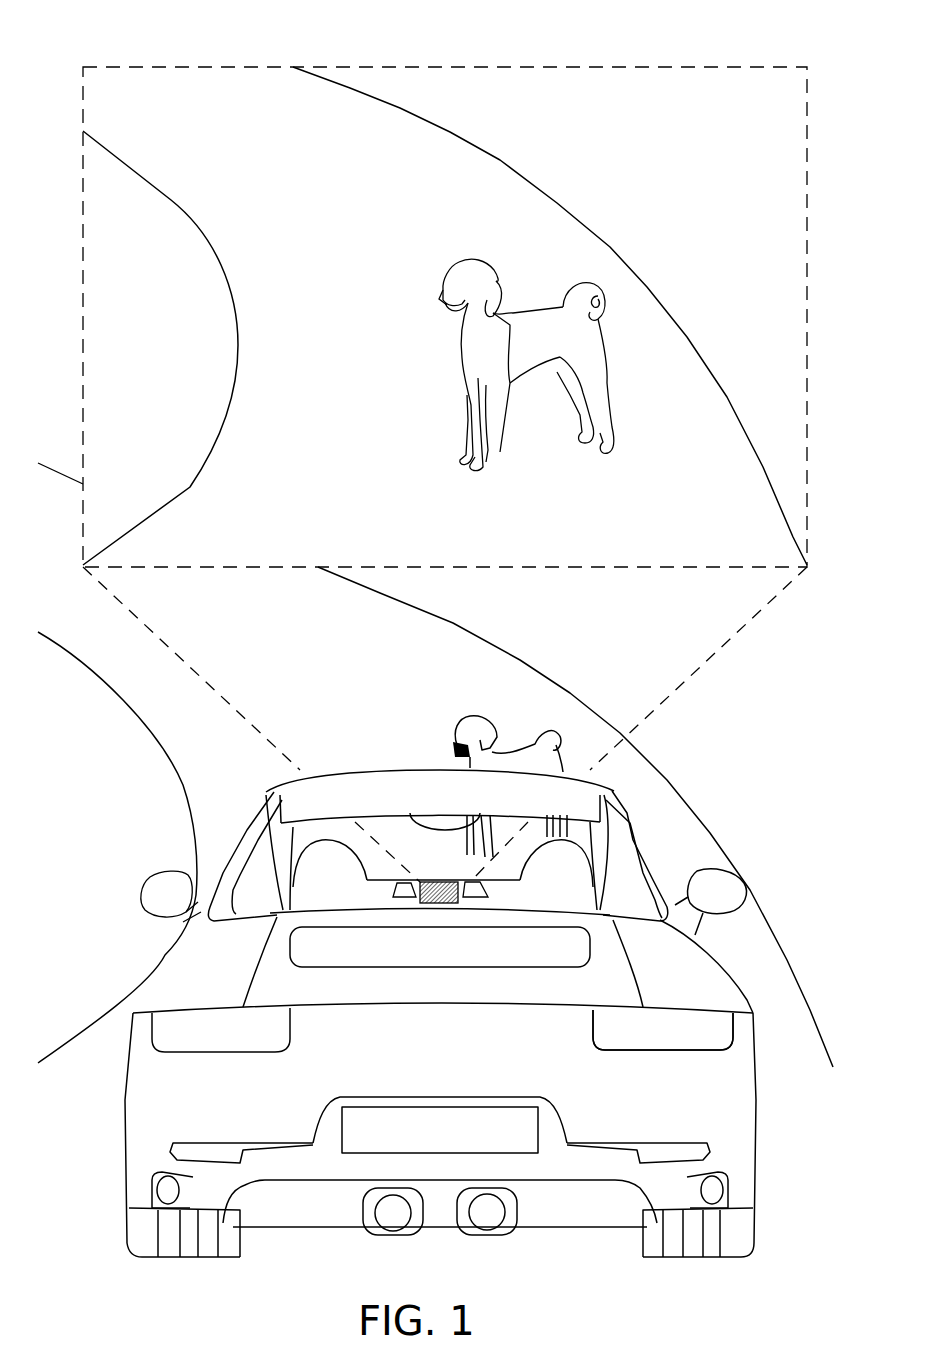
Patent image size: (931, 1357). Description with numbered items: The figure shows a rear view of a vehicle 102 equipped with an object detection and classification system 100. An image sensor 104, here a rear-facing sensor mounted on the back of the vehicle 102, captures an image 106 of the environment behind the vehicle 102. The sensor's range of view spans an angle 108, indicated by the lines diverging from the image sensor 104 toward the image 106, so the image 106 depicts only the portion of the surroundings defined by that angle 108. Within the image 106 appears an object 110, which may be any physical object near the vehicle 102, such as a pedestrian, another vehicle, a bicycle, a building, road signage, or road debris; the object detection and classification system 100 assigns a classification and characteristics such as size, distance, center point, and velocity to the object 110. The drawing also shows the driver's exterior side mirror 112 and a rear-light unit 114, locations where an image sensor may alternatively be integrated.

The object detection and classification system 100 is at (147, 35).
The vehicle 102 is at (424, 1139).
The image sensor 104 is at (440, 880).
The image 106 is at (146, 102).
The angle 108 is at (678, 683).
The object 110 is at (443, 290).
The driver's exterior side mirror 112 is at (170, 871).
The rear-light unit 114 is at (660, 1050).